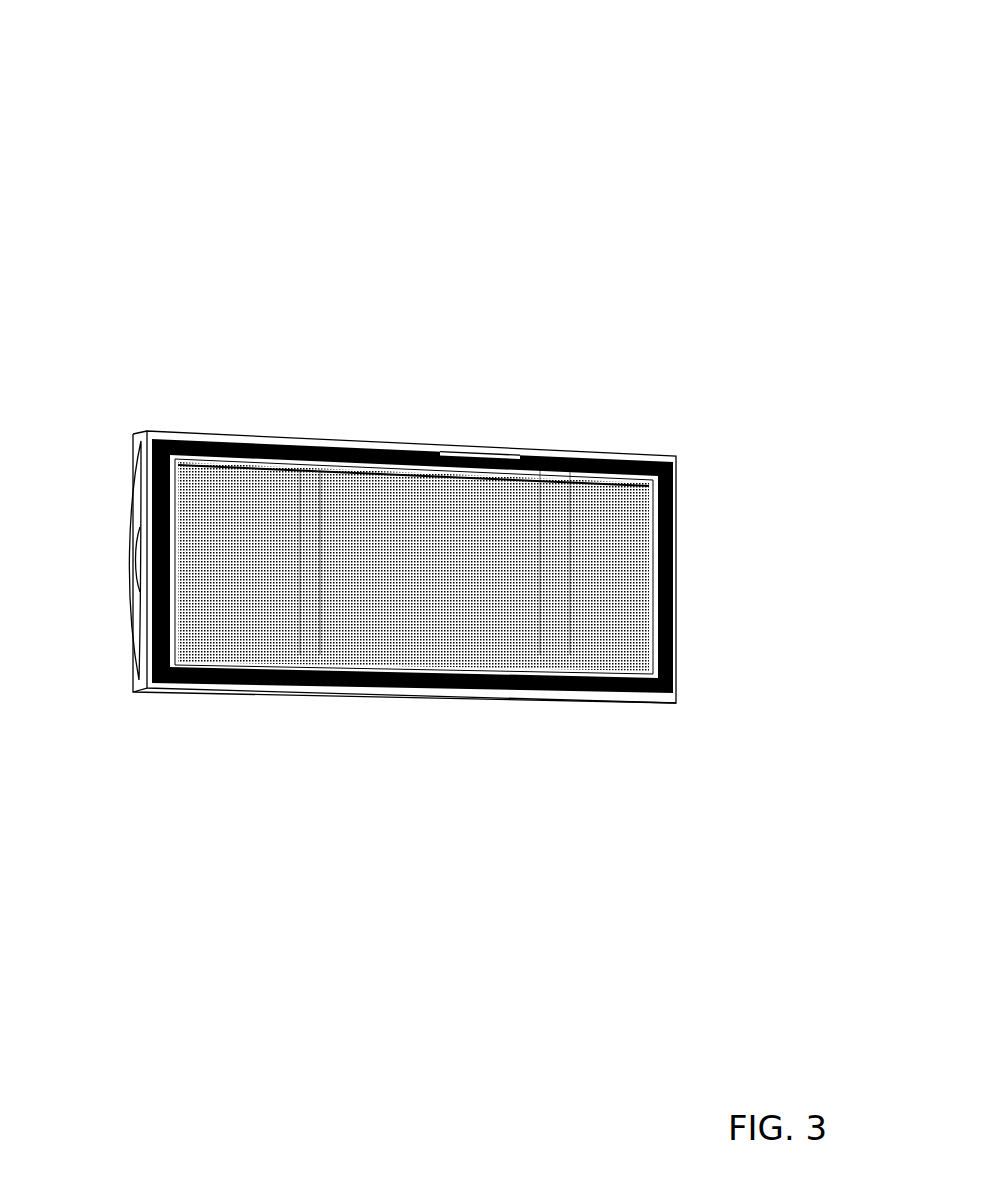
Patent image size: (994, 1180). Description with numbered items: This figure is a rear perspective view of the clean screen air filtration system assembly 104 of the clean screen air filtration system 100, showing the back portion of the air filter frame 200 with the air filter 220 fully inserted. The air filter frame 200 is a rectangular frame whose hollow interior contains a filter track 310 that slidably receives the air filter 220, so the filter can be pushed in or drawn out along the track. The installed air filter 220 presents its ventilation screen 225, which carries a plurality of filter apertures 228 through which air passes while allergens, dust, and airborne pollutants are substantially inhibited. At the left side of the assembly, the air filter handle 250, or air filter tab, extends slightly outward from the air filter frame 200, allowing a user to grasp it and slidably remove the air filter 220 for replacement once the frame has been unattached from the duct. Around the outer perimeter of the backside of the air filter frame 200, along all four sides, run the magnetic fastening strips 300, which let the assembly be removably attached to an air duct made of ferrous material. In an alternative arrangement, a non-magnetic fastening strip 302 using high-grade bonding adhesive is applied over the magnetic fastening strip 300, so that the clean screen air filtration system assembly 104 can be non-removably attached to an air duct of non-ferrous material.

The clean screen air filtration system 100 is at (560, 86).
The clean screen air filtration system assembly 104 is at (603, 130).
The air filter frame 200 is at (184, 430).
The air filter 220 is at (360, 640).
The ventilation screen 225 is at (422, 583).
The filter apertures 228 is at (555, 653).
The air filter handle 250 is at (136, 506).
The magnetic fastening strips 300 is at (436, 449).
The non-magnetic fastening strip 302 is at (524, 453).
The filter track 310 is at (173, 690).